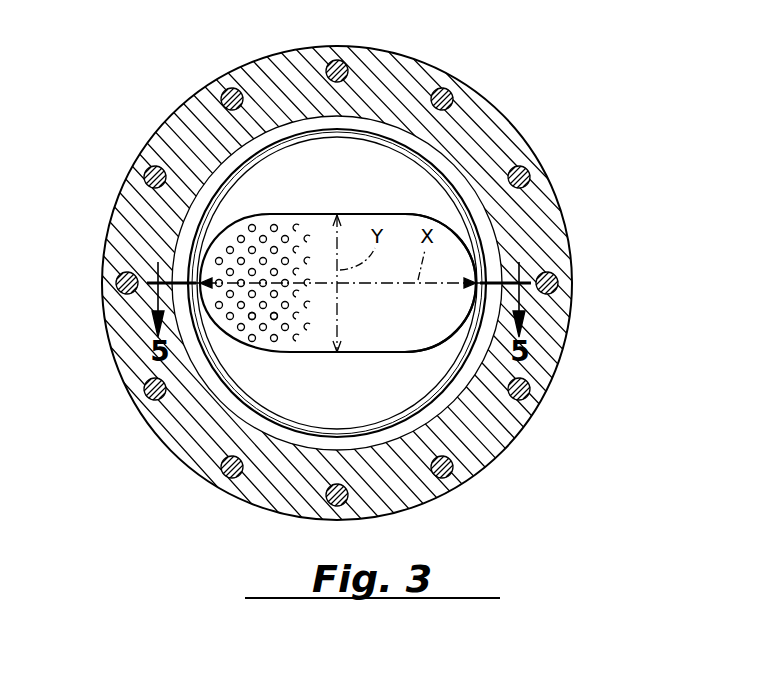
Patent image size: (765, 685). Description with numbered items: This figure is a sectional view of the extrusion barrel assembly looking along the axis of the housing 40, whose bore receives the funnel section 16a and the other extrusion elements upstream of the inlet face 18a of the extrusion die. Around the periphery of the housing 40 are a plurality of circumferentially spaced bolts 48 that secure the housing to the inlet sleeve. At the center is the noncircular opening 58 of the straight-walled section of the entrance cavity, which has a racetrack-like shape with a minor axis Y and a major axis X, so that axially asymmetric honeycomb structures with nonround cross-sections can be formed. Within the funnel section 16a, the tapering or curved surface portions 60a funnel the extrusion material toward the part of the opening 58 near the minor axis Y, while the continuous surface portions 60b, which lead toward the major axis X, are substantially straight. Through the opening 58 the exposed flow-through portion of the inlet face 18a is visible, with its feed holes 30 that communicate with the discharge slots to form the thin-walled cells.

The housing 40 is at (562, 212).
The bolts 48 is at (148, 166).
The funnel section 16a is at (380, 152).
The tapering or curved surface portions 60a is at (310, 190).
The surface portions 60b is at (480, 272).
The inlet face 18a is at (222, 312).
The noncircular opening 58 is at (210, 261).
The feed holes 30 is at (253, 320).